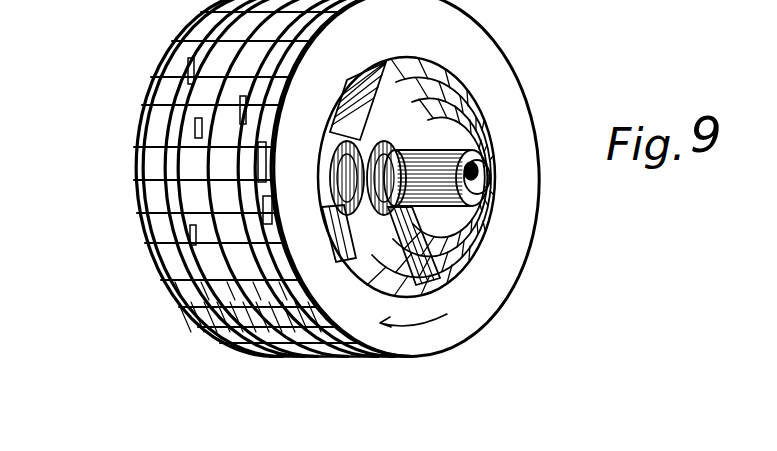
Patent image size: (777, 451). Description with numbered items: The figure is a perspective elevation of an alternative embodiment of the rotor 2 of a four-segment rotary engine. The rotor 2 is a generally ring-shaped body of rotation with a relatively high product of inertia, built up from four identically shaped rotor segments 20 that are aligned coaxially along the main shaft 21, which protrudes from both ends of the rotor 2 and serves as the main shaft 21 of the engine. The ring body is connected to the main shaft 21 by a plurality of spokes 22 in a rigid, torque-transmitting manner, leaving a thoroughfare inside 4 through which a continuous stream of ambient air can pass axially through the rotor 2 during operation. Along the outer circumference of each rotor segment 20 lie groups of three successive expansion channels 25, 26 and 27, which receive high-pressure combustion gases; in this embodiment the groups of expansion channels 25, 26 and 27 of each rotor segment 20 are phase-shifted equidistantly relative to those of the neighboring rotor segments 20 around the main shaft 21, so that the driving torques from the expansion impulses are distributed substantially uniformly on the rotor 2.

The rotor 2 is at (487, 325).
The thoroughfare inside 4 is at (437, 250).
The rotor segment 20 is at (470, 104).
The main shaft 21 is at (482, 168).
The spokes 22 is at (374, 242).
The expansion channel 25 is at (201, 345).
The expansion channel 26 is at (248, 345).
The expansion channel 27 is at (320, 350).